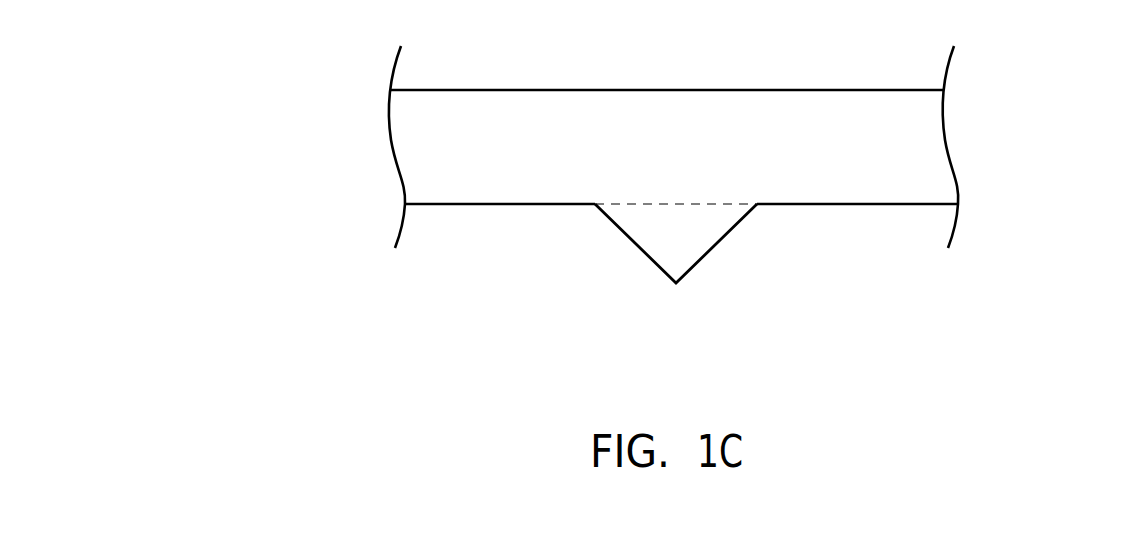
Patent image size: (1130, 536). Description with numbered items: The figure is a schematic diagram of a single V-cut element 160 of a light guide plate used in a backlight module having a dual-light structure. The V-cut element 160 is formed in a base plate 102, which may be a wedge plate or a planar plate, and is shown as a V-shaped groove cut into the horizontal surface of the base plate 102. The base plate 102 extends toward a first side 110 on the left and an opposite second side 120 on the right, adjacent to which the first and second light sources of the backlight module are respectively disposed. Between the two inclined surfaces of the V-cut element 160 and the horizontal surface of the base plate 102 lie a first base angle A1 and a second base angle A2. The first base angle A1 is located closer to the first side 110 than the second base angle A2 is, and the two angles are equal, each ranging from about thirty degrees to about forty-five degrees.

The base plate 102 is at (690, 152).
The first side 110 is at (367, 149).
The second side 120 is at (967, 148).
The V-cut element 160 is at (683, 282).
The first base angle A1 is at (648, 207).
The second base angle A2 is at (703, 207).